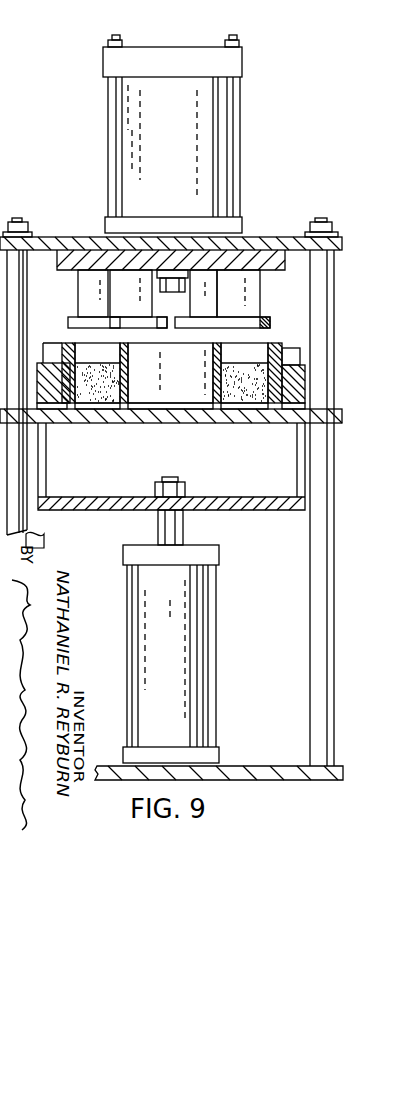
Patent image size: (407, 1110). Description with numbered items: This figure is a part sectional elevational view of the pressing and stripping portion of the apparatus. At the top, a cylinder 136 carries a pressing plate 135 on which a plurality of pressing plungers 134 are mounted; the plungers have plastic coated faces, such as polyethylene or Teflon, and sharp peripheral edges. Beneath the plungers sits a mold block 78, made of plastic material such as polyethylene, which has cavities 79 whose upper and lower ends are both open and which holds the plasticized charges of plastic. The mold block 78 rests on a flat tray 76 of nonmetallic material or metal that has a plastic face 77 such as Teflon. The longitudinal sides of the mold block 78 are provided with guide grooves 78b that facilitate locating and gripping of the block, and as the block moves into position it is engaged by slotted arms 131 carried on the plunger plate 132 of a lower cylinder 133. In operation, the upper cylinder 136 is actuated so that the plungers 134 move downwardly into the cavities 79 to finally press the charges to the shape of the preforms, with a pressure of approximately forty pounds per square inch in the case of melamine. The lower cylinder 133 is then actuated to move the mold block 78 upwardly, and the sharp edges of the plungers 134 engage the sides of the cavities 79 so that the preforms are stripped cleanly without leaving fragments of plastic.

The cylinder 136 is at (235, 160).
The pressing plate 135 is at (285, 253).
The pressing plungers 134 is at (266, 318).
The cavities 79 is at (266, 345).
The mold block 78 is at (280, 343).
The guide grooves 78b is at (292, 373).
The slotted arms 131 is at (295, 386).
The plastic face 77 is at (197, 413).
The flat tray 76 is at (201, 411).
The plunger plate 132 is at (243, 505).
The cylinder 133 is at (186, 624).